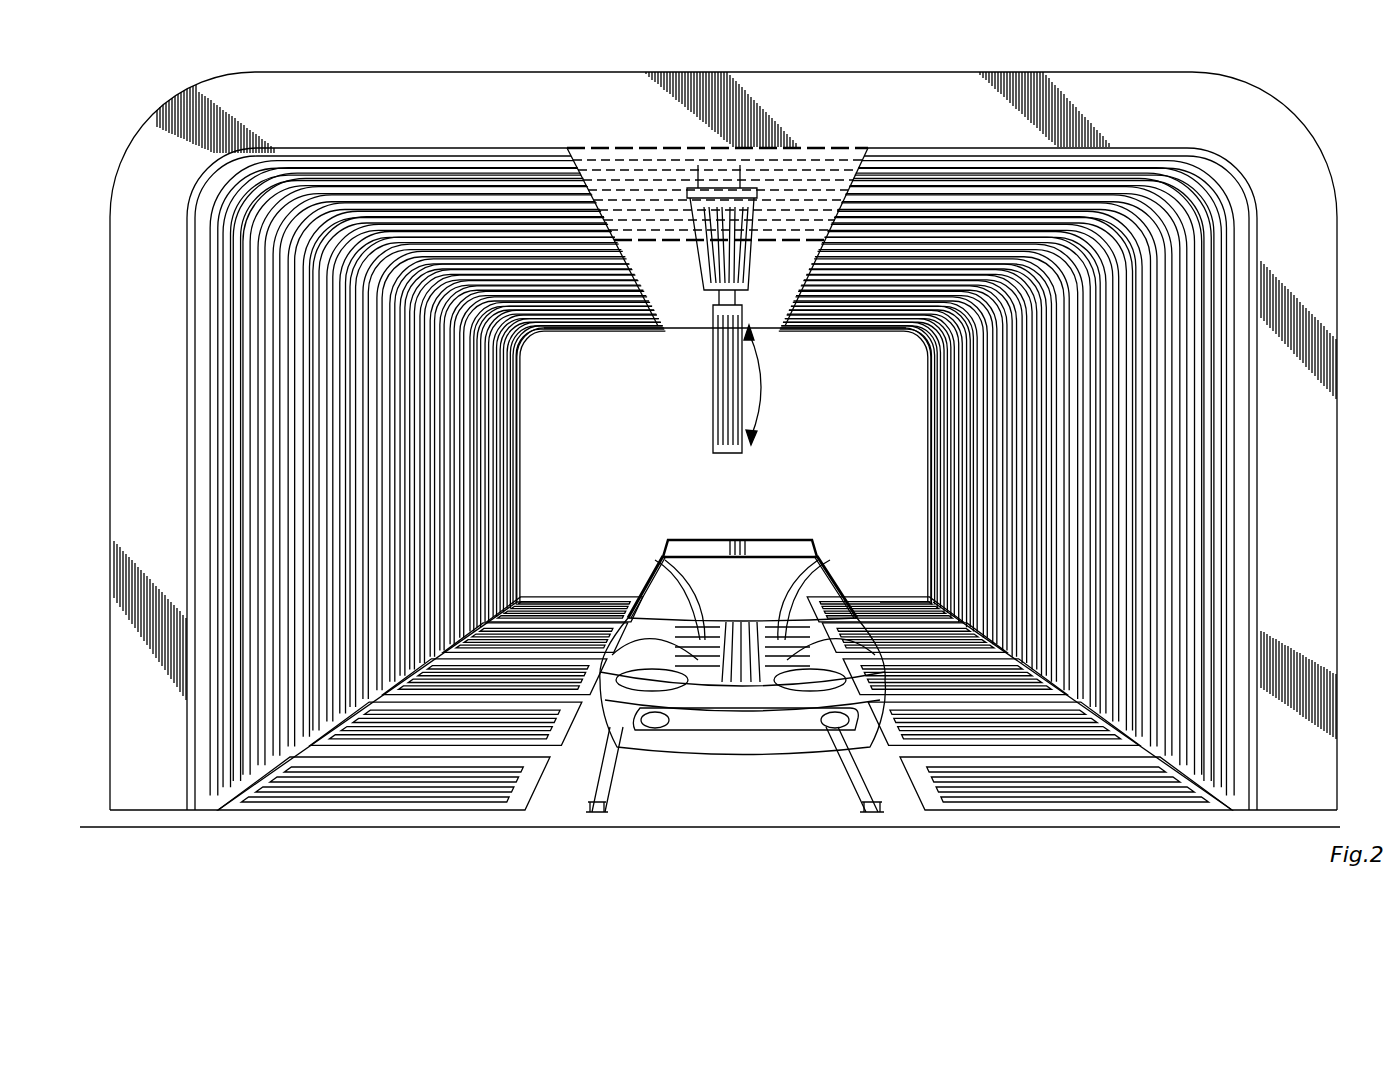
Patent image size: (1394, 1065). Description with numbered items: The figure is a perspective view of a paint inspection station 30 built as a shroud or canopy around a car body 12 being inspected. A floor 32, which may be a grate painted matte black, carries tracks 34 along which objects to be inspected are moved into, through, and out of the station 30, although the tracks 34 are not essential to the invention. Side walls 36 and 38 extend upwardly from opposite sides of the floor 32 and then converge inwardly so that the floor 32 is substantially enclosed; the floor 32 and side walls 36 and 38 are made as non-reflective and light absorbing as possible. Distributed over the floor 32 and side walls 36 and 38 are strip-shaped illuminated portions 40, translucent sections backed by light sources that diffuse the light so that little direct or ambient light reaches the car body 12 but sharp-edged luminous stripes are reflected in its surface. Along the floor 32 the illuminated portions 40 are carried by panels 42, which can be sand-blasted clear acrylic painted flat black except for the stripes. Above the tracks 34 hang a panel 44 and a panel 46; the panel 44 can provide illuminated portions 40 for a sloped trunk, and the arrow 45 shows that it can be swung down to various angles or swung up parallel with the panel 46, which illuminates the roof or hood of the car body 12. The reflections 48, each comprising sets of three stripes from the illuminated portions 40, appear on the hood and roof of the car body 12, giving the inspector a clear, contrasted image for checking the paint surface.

The paint inspection station 30 is at (242, 70).
The car body 12 is at (743, 612).
The floor 32 is at (548, 810).
The tracks 34 is at (877, 813).
The side wall 36 is at (195, 465).
The side wall 38 is at (1252, 482).
The illuminated portions 40 is at (415, 163).
The panels 42 is at (252, 811).
The panel 44 is at (713, 427).
The arrow 45 is at (768, 385).
The panel 46 is at (705, 292).
The reflections 48 is at (753, 542).